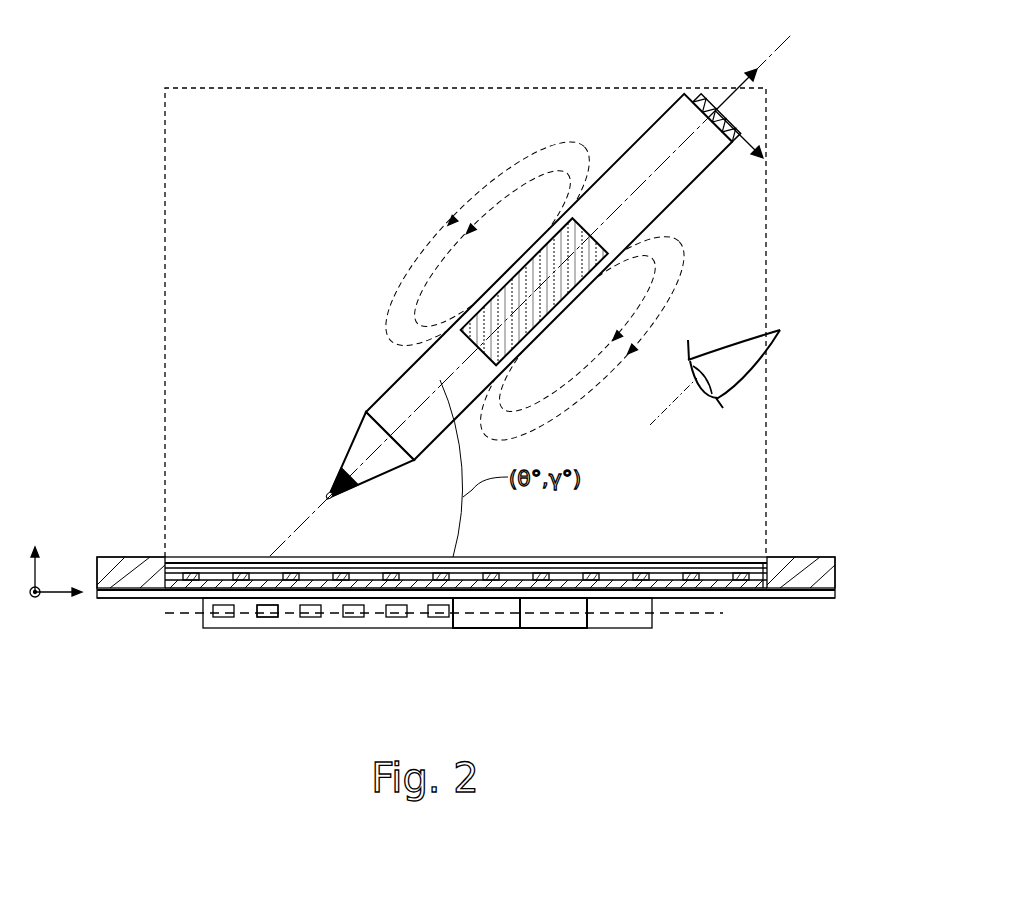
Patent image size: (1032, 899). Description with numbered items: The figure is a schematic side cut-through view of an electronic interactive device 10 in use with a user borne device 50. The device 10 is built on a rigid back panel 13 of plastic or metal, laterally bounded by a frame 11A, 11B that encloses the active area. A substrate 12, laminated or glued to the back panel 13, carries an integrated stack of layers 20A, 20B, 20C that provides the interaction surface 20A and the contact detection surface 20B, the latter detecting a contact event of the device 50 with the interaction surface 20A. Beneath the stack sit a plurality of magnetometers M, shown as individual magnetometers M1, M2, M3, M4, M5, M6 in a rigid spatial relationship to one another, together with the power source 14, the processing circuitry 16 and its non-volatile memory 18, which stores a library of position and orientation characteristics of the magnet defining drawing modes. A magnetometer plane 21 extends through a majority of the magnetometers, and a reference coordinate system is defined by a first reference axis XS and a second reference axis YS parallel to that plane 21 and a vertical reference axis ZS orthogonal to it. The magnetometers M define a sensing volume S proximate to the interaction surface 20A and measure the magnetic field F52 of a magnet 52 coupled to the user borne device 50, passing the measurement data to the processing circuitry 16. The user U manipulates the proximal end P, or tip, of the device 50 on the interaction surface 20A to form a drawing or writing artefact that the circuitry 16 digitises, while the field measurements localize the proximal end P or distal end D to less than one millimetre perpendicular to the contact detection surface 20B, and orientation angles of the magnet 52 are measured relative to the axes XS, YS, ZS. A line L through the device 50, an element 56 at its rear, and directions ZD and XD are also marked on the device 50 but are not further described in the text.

The sensing volume S is at (234, 112).
The user borne device 50 is at (530, 282).
The pen axis L is at (668, 158).
The pen rear coil/spring 56 is at (722, 92).
The distal end D is at (754, 124).
The pen axis direction ZD is at (754, 90).
The pen lateral direction XD is at (758, 141).
The magnetic field F52 is at (494, 208).
The magnet 52 is at (487, 300).
The user U is at (708, 358).
The proximal end P is at (317, 530).
The electronic interactive device 10 is at (148, 470).
The frame 11A is at (828, 572).
The frame 11B is at (150, 556).
The substrate 12 is at (738, 590).
The rigid back panel 13 is at (126, 594).
The interaction surface 20A is at (655, 560).
The contact detection surface 20B is at (568, 572).
The layer of integrated stack 20C is at (758, 577).
The power source 14 is at (624, 628).
The processing circuitry 16 is at (555, 628).
The non-volatile memory 18 is at (488, 628).
The magnetometer plane 21 is at (686, 614).
The plurality of magnetometers M is at (258, 620).
The magnetometer M1 is at (222, 620).
The sensor module 2 M2 is at (270, 620).
The sensor module 3 M3 is at (310, 620).
The sensor module 4 M4 is at (352, 620).
The sensor module 5 M5 is at (396, 620).
The sensor module 6 M6 is at (440, 620).
The vertical reference axis ZS is at (35, 560).
The first reference axis XS is at (65, 607).
The second reference axis YS is at (24, 606).